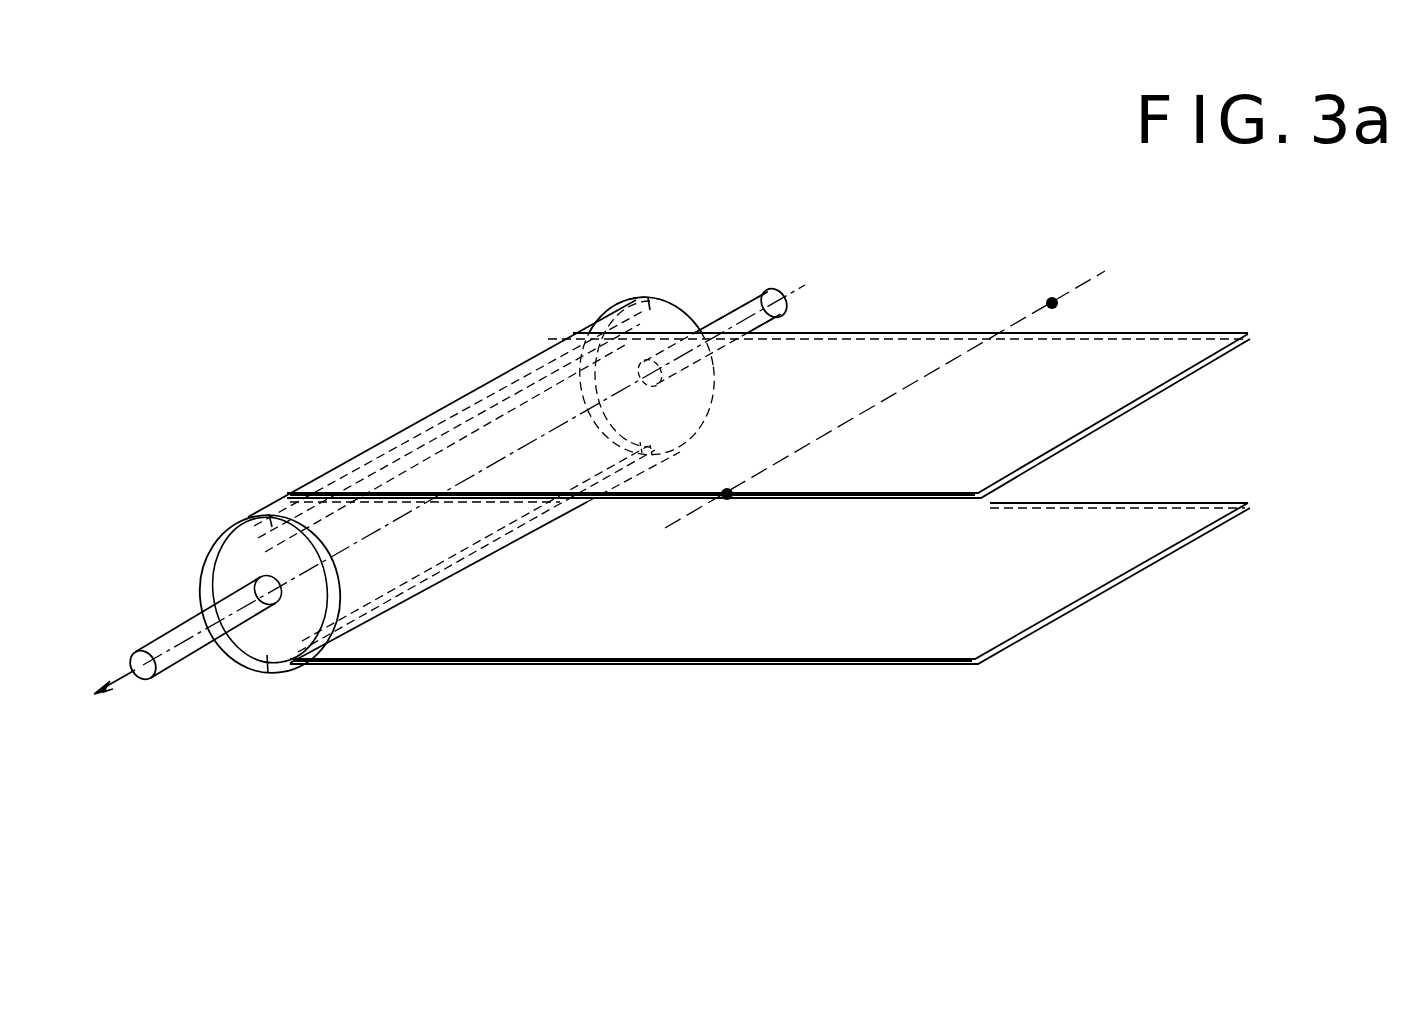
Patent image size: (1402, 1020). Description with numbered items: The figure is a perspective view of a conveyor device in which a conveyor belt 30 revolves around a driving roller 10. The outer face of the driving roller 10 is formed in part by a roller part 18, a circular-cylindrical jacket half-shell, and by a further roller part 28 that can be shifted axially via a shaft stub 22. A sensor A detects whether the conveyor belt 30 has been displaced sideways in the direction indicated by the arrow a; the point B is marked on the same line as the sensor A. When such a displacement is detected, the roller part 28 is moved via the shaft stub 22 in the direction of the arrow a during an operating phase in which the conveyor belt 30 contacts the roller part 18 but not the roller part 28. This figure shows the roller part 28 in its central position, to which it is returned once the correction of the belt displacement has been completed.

The driving roller 10 is at (411, 334).
The roller part 18 is at (222, 534).
The shaft stub 22 is at (200, 643).
The roller part 28 is at (283, 637).
The conveyor belt 30 is at (797, 640).
The arrow a is at (120, 682).
The sensor A is at (728, 527).
The point B is at (1057, 275).